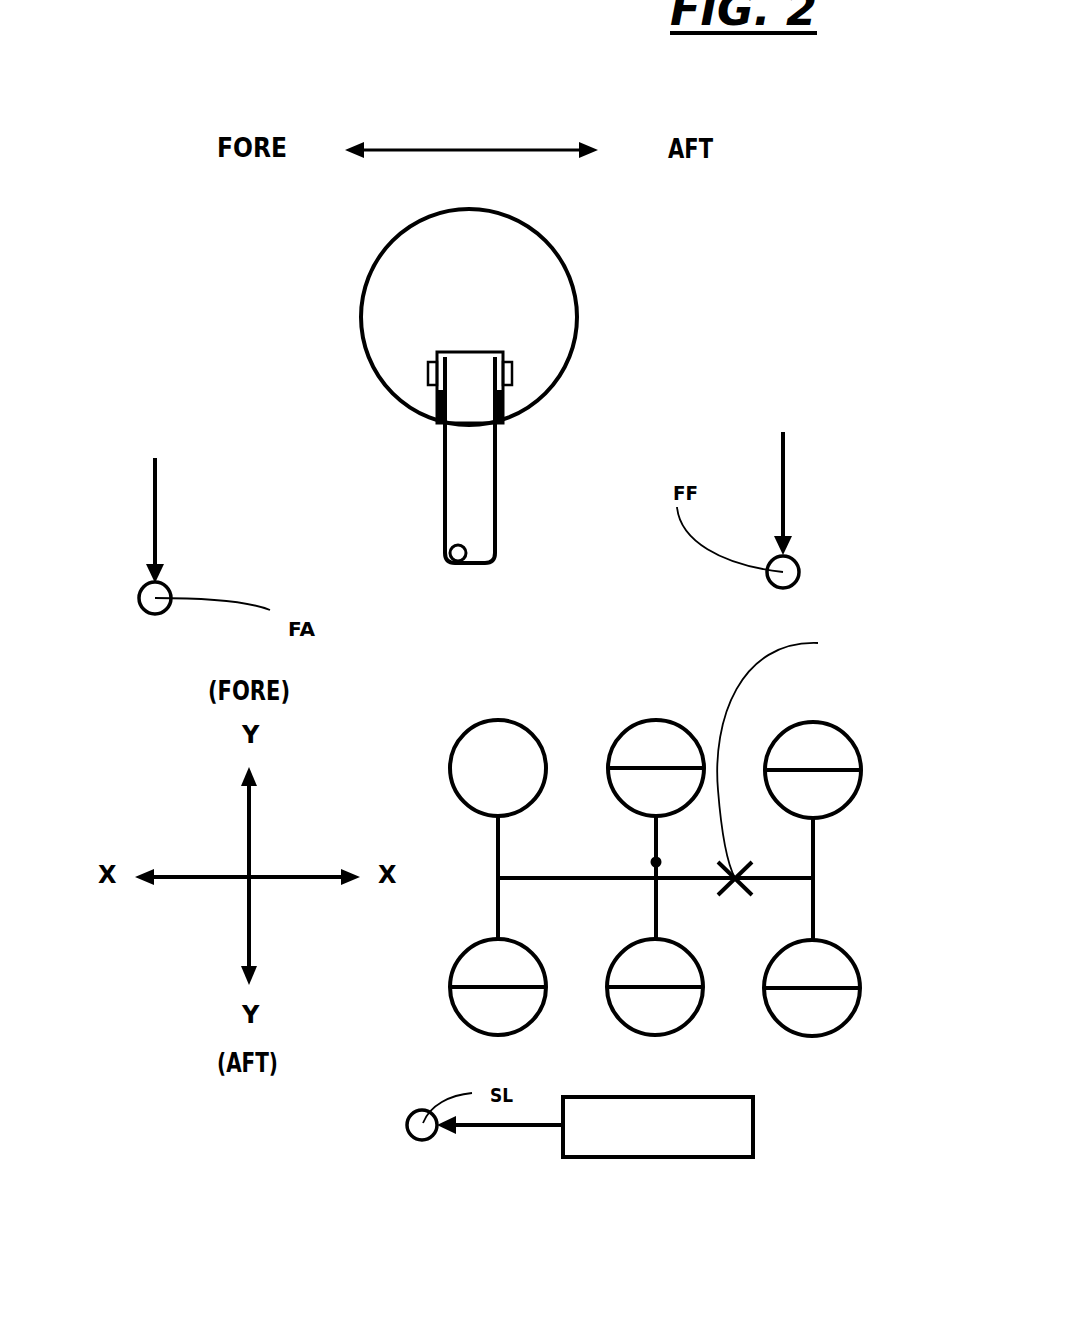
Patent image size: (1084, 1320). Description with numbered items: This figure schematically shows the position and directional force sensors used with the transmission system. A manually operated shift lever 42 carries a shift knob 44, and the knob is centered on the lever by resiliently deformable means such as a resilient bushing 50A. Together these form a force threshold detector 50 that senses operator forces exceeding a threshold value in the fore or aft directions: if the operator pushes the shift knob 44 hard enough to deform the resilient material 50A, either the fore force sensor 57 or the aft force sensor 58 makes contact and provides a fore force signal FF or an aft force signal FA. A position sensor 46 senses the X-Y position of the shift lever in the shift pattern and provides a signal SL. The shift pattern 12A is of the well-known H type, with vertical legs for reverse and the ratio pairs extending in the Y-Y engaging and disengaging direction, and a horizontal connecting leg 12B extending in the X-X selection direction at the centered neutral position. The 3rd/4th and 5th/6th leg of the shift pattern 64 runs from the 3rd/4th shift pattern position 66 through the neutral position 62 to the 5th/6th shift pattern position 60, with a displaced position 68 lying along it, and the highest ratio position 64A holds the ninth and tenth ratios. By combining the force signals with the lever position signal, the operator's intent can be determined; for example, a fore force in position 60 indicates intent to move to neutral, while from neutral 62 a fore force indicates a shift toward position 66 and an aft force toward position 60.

The shift knob 44 is at (440, 278).
The force threshold detector 50 is at (633, 315).
The resilient bushing 50A is at (440, 413).
The aft force sensor 58 is at (428, 364).
The fore force sensor 57 is at (512, 365).
The shift lever 42 is at (473, 520).
The shift pattern 12A is at (676, 848).
The 3rd/4th and 5th/6th leg of the shift pattern 64 is at (678, 708).
The highest ratio position 64A is at (833, 977).
The 3rd/4th shift pattern position 66 is at (607, 762).
The displaced position 68 is at (652, 862).
The neutral position in the shift pattern 62 is at (863, 863).
The horizontal connecting leg 12B is at (550, 882).
The 5th/6th shift pattern position 60 is at (693, 1013).
The position sensor 46 is at (722, 1127).